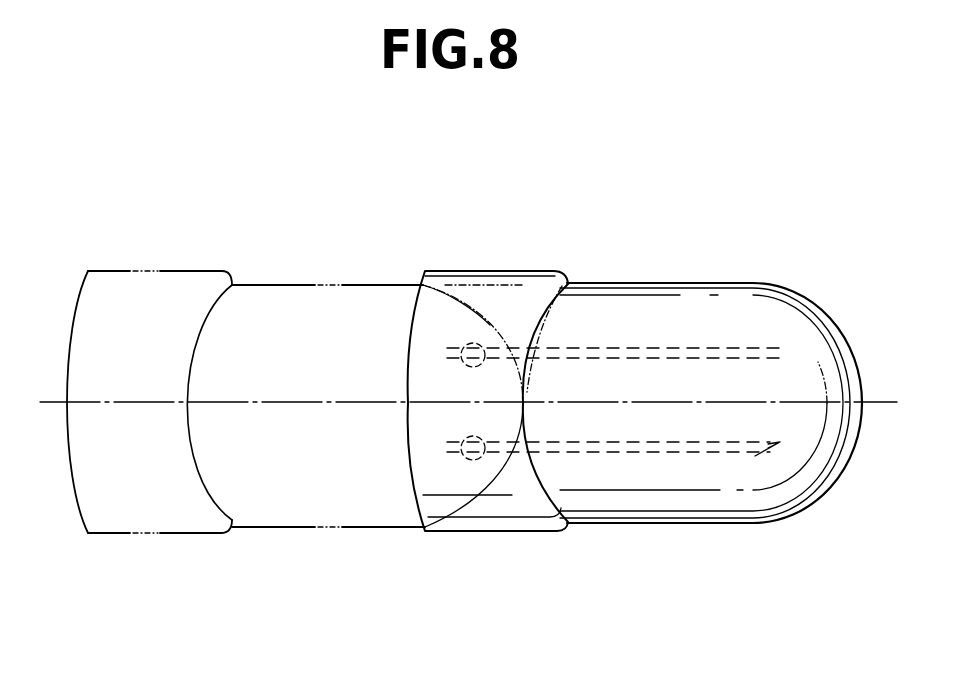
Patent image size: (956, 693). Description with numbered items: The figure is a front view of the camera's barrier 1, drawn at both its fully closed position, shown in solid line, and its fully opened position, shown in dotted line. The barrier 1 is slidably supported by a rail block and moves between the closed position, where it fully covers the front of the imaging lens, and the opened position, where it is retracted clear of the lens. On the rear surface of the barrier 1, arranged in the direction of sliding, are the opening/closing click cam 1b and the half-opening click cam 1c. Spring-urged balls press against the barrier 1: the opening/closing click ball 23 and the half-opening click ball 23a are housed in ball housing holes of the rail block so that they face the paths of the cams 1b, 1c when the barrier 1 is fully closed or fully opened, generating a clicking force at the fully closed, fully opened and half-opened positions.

The barrier 1 is at (300, 285).
The opening/closing click cam 1b is at (736, 350).
The half-opening click cam 1c is at (700, 455).
The opening/closing click ball 23 is at (474, 343).
The half-opening click ball 23a is at (471, 460).